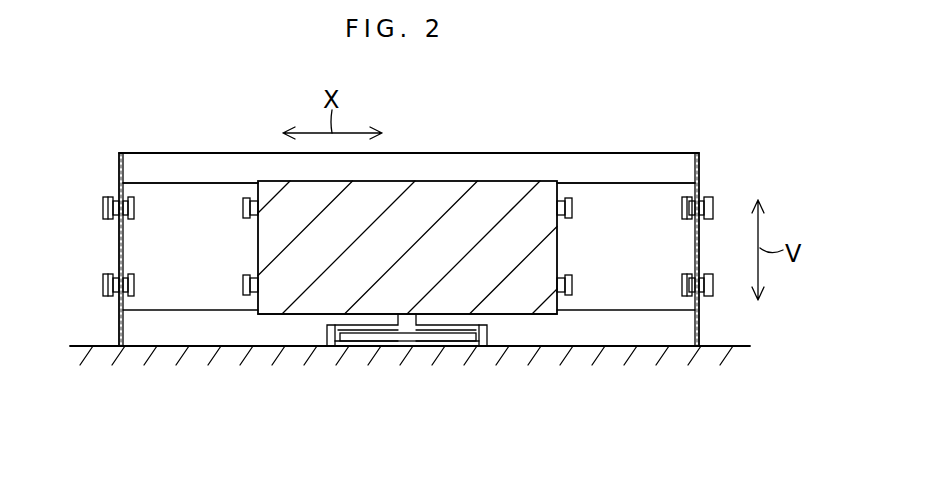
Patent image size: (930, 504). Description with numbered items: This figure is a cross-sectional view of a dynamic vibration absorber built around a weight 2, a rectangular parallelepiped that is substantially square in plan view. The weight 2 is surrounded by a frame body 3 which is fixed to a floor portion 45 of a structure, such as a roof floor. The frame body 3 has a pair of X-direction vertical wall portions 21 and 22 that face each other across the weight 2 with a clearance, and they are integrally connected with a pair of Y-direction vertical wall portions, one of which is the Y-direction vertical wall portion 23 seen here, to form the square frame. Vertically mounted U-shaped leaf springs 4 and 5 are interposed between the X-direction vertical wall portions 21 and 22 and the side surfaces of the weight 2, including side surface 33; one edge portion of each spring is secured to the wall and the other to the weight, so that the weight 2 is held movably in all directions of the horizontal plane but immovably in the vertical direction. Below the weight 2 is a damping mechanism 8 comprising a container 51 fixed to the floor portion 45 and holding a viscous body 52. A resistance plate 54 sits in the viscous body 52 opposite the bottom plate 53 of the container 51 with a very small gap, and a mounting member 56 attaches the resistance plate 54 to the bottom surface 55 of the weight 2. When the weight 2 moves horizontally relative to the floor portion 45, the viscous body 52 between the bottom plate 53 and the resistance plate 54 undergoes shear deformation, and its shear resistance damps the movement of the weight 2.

The weight 2 is at (430, 200).
The frame body 3 is at (119, 166).
The leaf spring 4 is at (187, 207).
The leaf spring 5 is at (628, 212).
The damping mechanism 8 is at (418, 370).
The X-direction vertical wall portion 21 is at (120, 250).
The X-direction vertical wall portion 22 is at (700, 248).
The Y-direction vertical wall portion 23 is at (583, 170).
The side surface 33 is at (257, 248).
The floor portion 45 is at (92, 360).
The container 51 is at (483, 330).
The viscous body 52 is at (347, 340).
The bottom plate 53 is at (458, 338).
The resistance plate 54 is at (382, 336).
The bottom surface 55 is at (290, 317).
The mounting member 56 is at (404, 337).